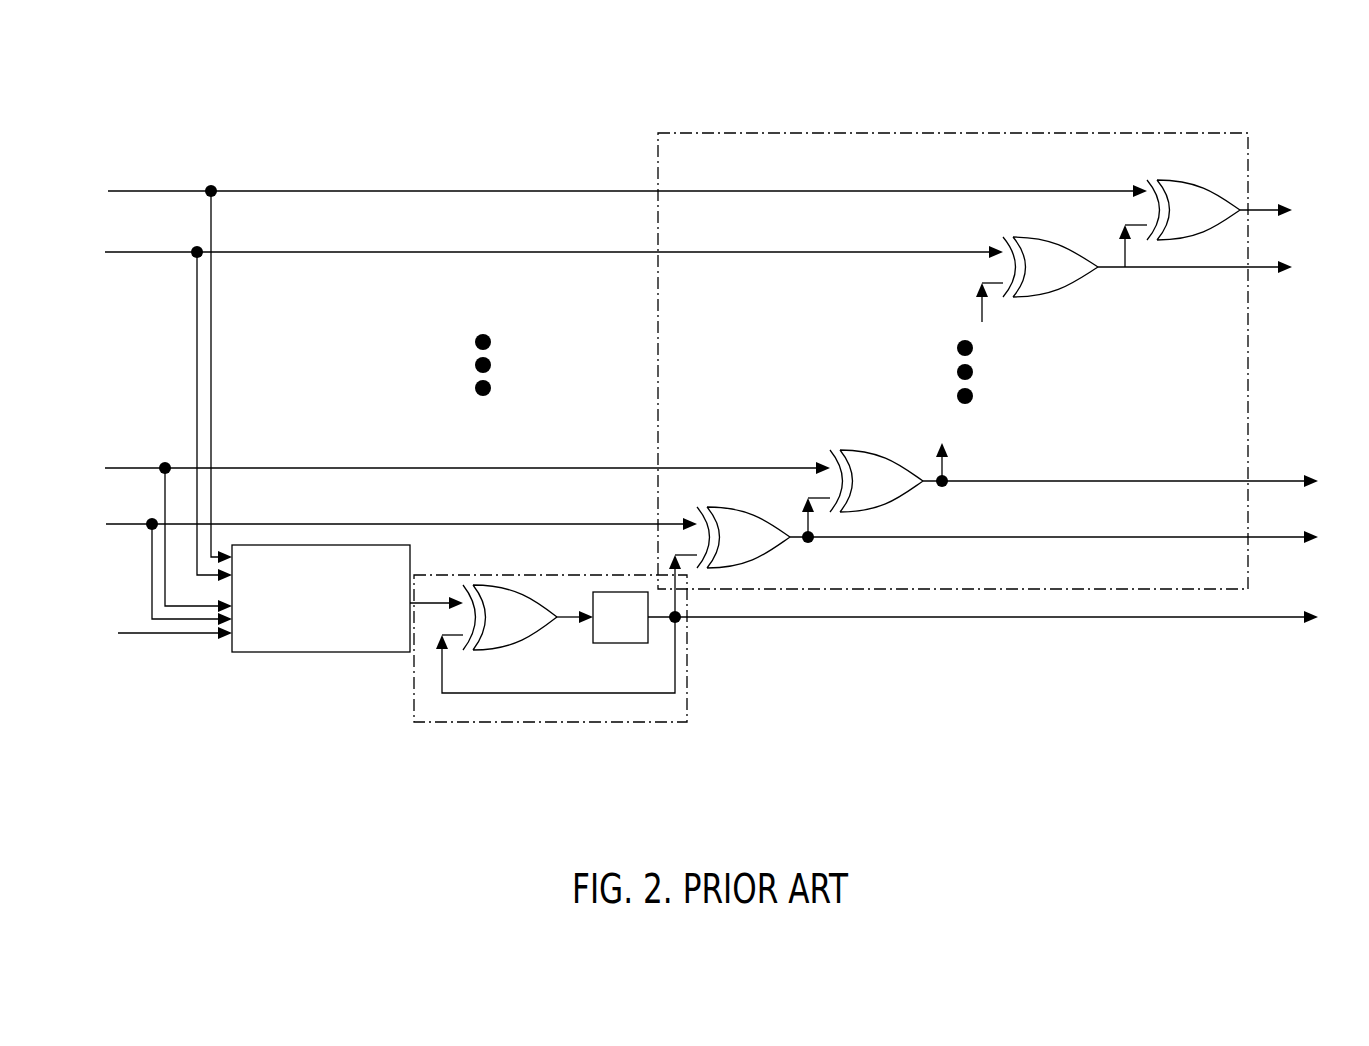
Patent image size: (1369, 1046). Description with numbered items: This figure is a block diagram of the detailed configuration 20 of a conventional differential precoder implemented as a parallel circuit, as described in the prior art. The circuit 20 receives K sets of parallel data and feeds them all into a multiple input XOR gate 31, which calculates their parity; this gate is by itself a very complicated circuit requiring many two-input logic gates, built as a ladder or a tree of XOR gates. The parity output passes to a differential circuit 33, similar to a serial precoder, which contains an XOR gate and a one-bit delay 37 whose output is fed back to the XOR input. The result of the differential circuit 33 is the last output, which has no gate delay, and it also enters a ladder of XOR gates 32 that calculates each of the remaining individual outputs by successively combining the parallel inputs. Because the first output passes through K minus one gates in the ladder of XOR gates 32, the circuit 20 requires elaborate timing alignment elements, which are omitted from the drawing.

The circuit 20 is at (428, 65).
The multiple input XOR gate 31 is at (281, 655).
The ladder of XOR gates 32 is at (696, 125).
The differential circuit 33 is at (686, 723).
The one-bit delay 37 is at (590, 645).